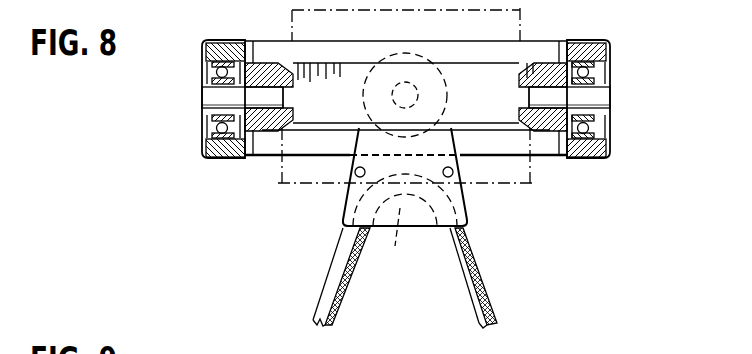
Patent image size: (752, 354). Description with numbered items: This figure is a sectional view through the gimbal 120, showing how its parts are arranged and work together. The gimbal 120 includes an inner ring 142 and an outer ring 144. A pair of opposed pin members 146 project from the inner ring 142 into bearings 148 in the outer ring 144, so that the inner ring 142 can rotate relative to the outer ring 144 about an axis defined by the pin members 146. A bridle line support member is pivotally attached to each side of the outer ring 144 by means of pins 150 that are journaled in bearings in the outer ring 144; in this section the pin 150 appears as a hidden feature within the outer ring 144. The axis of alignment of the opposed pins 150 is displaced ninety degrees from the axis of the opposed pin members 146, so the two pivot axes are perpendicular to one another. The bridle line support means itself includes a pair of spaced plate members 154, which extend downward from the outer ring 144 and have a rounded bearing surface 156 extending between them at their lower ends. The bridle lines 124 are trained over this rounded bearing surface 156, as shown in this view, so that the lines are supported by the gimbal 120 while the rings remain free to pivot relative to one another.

The gimbal 120 is at (588, 26).
The bridle lines 124 is at (487, 292).
The inner ring 142 is at (264, 122).
The outer ring 144 is at (223, 41).
The pin members 146 is at (217, 97).
The bearings 148 is at (221, 127).
The pins 150 is at (411, 98).
The plate members 154 is at (455, 190).
The rounded bearing surface 156 is at (399, 240).